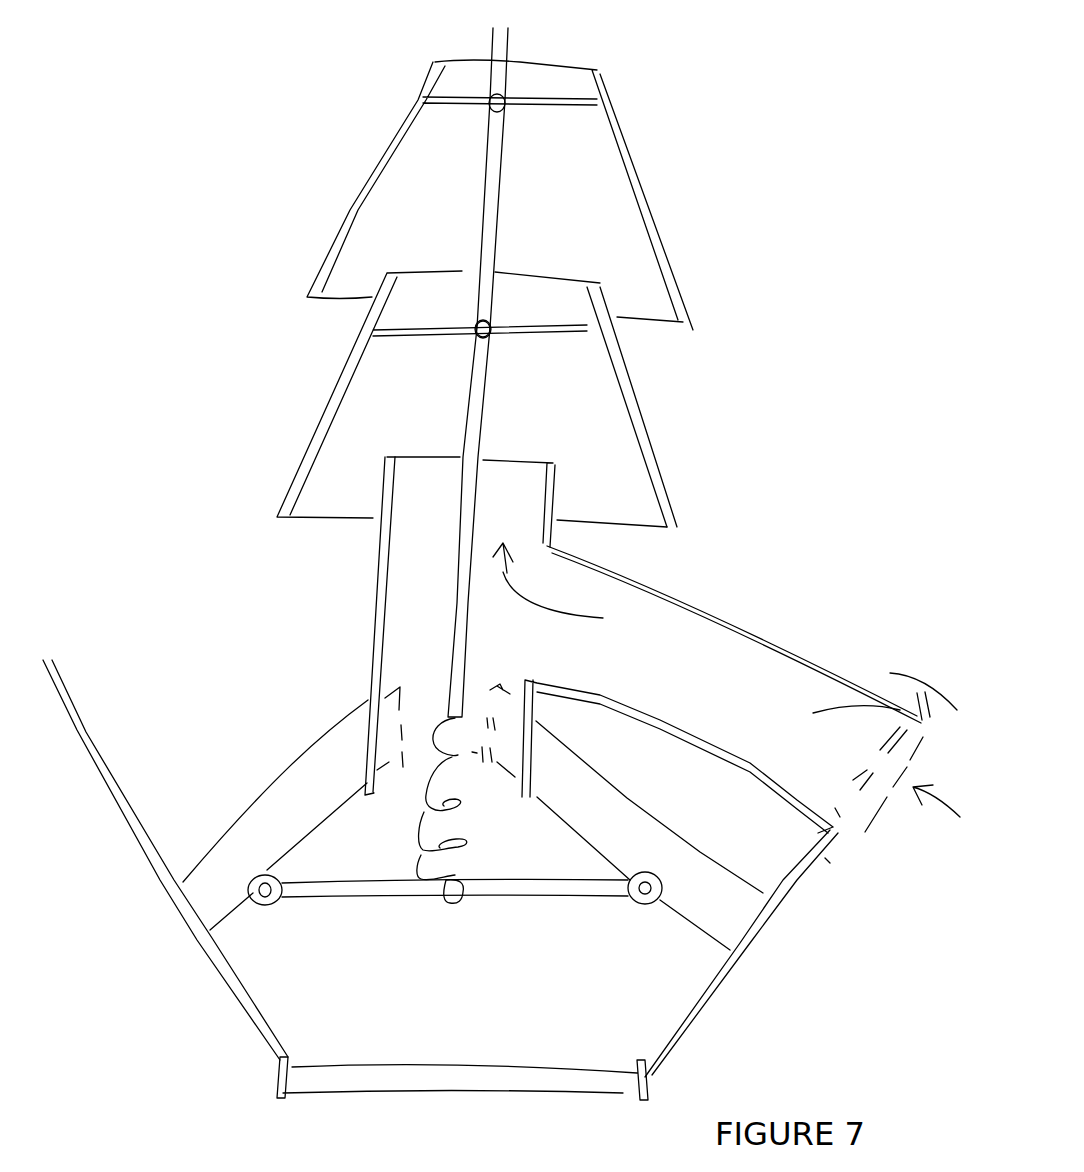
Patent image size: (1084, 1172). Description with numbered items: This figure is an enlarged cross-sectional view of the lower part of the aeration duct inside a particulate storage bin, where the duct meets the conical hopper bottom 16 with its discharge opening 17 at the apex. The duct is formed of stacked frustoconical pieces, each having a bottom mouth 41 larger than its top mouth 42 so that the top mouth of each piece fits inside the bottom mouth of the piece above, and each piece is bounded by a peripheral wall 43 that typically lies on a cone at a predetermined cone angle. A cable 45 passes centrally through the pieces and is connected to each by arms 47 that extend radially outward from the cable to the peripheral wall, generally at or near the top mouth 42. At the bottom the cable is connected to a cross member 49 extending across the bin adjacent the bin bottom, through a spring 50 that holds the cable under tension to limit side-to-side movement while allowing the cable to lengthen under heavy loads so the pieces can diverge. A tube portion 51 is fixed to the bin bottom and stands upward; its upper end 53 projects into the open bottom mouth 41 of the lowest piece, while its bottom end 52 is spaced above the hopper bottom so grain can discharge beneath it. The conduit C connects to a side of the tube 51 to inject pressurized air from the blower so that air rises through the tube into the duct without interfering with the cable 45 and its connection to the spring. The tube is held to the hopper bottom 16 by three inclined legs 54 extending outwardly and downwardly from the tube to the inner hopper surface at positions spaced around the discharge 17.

The hopper bottom 16 is at (732, 960).
The discharge opening 17 is at (564, 1080).
The bottom mouth 41 is at (645, 527).
The top mouth 42 is at (573, 284).
The peripheral wall 43 is at (627, 373).
The cable 45 is at (460, 603).
The arms 47 is at (538, 333).
The cross member 49 is at (503, 897).
The spring 50 is at (405, 846).
The tube portion 51 is at (372, 606).
The bottom end of the tube 52 is at (533, 797).
The upper end of the tube 53 is at (433, 452).
The inclined legs 54 is at (300, 779).
The conduit C is at (728, 622).